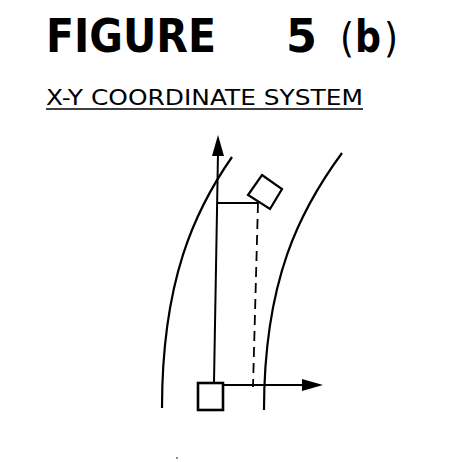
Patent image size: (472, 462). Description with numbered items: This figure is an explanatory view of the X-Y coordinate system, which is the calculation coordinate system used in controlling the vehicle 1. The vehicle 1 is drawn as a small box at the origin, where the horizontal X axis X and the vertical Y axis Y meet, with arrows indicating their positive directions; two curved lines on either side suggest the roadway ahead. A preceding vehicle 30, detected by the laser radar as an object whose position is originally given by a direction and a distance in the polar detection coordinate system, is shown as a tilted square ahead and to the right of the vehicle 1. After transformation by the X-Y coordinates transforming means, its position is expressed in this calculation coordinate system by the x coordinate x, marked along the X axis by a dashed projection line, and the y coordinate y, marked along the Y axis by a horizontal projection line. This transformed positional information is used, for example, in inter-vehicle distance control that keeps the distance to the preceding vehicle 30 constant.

The preceding vehicle 30 is at (275, 178).
The vehicle 1 is at (212, 410).
The X axis X is at (288, 385).
The Y axis Y is at (199, 243).
The x coordinate x is at (244, 308).
The y coordinate y is at (226, 221).